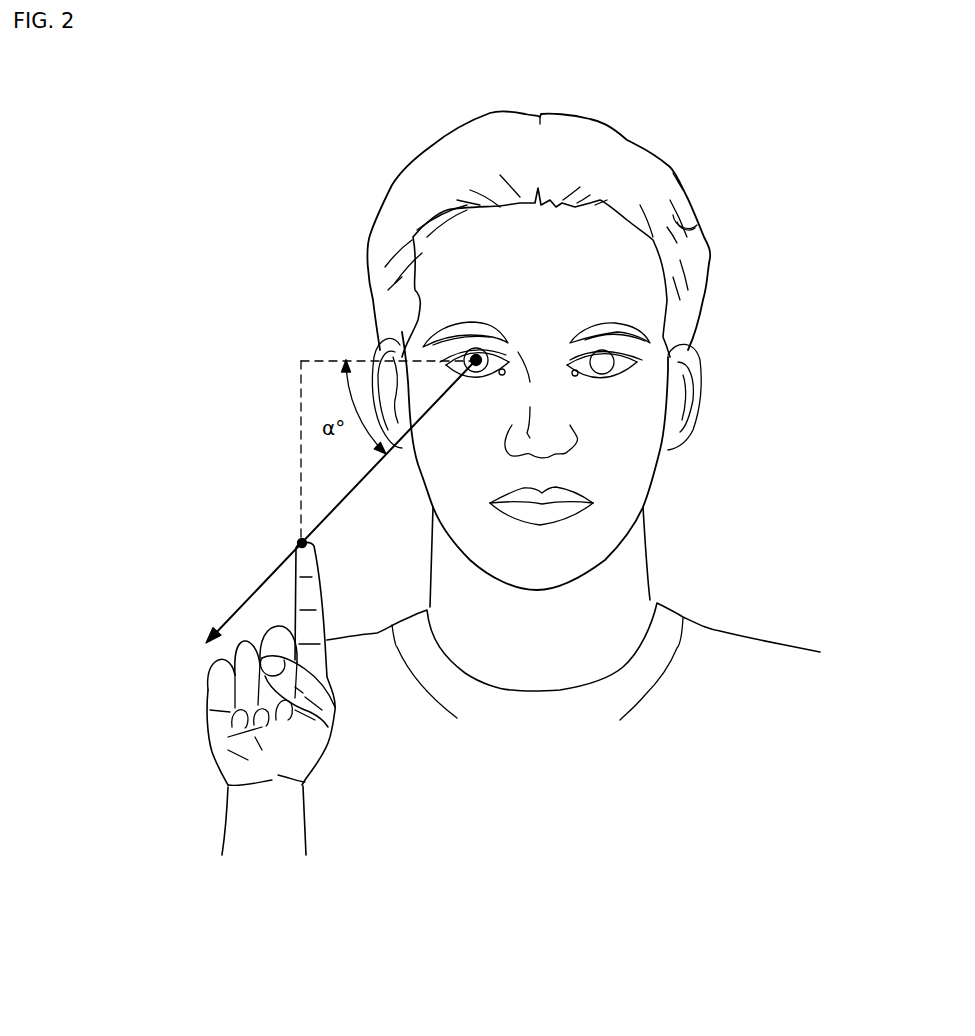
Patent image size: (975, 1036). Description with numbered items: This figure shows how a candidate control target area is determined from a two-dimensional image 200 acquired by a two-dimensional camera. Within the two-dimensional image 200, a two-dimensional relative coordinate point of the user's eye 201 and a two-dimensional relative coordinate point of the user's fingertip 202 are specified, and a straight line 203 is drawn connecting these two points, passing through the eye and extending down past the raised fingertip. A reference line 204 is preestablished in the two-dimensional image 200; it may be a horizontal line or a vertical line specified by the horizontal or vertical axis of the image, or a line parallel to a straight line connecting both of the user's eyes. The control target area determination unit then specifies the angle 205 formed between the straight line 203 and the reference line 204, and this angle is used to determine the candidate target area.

The two-dimensional image 200 is at (231, 83).
The eye 201 is at (470, 348).
The fingertip 202 is at (302, 541).
The straight line 203 is at (312, 513).
The reference line 204 is at (318, 360).
The angle 205 is at (310, 400).